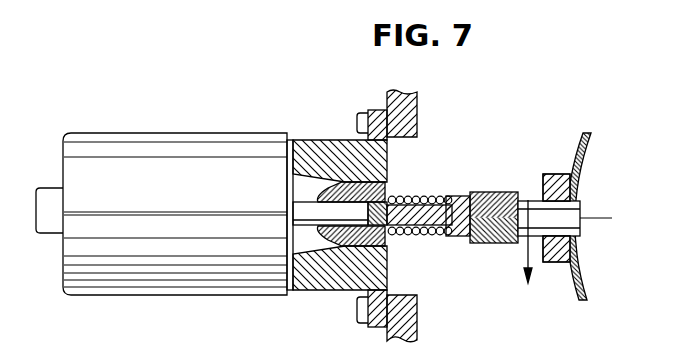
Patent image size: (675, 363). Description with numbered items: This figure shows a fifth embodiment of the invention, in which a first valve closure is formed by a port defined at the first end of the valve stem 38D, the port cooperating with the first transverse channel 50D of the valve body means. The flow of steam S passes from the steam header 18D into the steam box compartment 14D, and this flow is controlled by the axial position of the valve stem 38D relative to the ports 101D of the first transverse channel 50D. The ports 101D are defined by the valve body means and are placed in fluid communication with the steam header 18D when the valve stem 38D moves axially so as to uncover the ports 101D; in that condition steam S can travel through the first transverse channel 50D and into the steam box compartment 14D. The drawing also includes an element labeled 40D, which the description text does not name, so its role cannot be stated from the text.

The steam box compartment 14D is at (492, 338).
The steam header 18D is at (572, 165).
The valve stem 38D is at (486, 244).
The tubular member 40D is at (582, 198).
The first transverse channel 50D is at (547, 176).
The ports 101D is at (518, 195).
The steam S is at (531, 262).